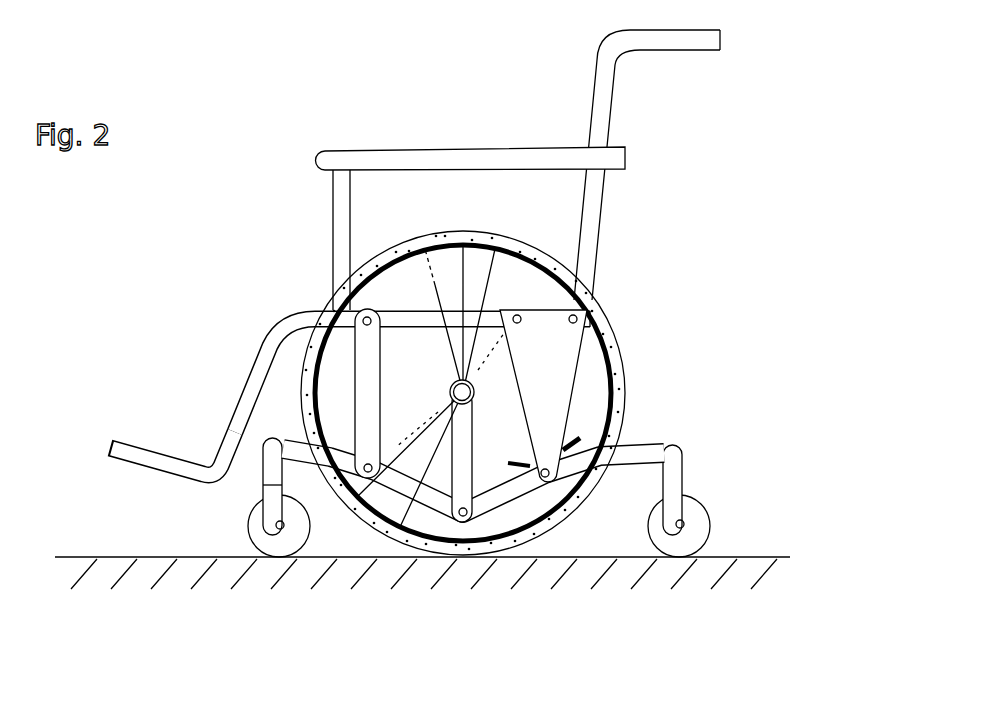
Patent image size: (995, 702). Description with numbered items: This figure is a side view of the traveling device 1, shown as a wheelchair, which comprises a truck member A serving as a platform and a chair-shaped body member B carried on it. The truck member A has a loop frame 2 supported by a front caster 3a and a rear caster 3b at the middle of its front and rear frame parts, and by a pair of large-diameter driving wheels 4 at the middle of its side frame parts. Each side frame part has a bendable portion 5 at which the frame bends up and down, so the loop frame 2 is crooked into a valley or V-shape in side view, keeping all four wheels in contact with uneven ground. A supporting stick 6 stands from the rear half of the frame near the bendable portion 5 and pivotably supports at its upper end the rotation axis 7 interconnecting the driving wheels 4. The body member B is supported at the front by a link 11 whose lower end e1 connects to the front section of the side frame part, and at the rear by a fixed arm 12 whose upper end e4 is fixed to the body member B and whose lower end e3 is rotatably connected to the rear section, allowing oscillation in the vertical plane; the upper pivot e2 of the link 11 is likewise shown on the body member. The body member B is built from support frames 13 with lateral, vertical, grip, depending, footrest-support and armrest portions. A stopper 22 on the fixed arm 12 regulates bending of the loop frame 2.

The traveling device 1 is at (223, 146).
The loop frame 2 is at (260, 406).
The front caster 3a is at (250, 553).
The rear caster 3b is at (683, 548).
The driving wheel 4 is at (617, 340).
The bendable portion 5 is at (468, 527).
The supporting stick 6 is at (472, 447).
The rotation axis 7 is at (452, 382).
The link 11 is at (380, 365).
The fixed arm 12 is at (532, 388).
The support frame 13 is at (287, 335).
The stopper 22 is at (594, 426).
The truck member A is at (651, 375).
The body member B is at (622, 131).
The lower end of link e1 is at (368, 478).
The pivot point e2 is at (367, 317).
The lower end of fixed arm e3 is at (552, 482).
The upper end of fixed arm e4 is at (542, 320).